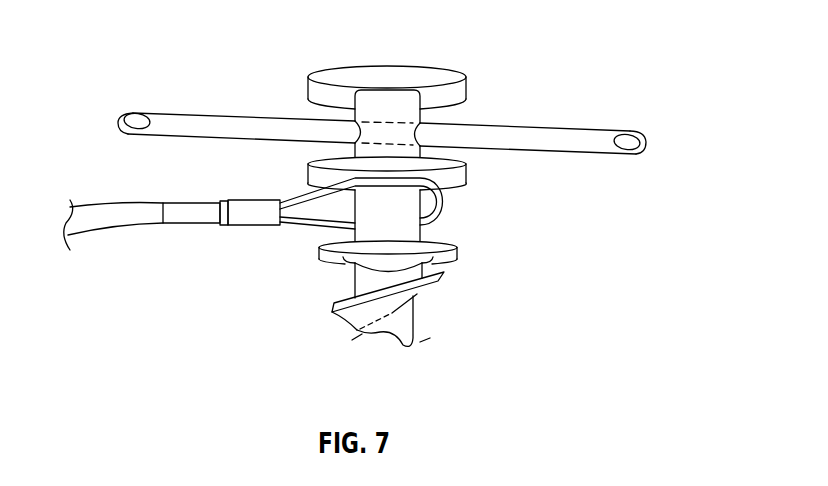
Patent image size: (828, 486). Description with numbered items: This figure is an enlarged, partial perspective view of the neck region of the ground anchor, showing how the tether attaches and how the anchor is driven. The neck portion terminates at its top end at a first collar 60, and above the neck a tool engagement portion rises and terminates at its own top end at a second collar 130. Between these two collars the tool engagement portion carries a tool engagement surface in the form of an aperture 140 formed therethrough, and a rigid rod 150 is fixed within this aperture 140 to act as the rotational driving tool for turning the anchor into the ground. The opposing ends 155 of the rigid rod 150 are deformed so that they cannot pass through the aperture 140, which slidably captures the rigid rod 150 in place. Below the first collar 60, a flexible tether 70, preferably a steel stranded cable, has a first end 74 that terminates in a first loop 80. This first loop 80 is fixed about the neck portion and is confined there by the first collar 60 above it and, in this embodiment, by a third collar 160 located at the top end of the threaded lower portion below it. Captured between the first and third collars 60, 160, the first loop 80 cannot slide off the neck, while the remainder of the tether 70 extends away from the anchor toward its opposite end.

The first collar 60 is at (467, 174).
The flexible tether 70 is at (116, 206).
The first end 74 is at (257, 227).
The first loop 80 is at (307, 226).
The second collar 130 is at (375, 66).
The aperture 140 is at (388, 120).
The rigid rod 150 is at (556, 124).
The opposing ends 155 is at (125, 115).
The third collar 160 is at (457, 254).